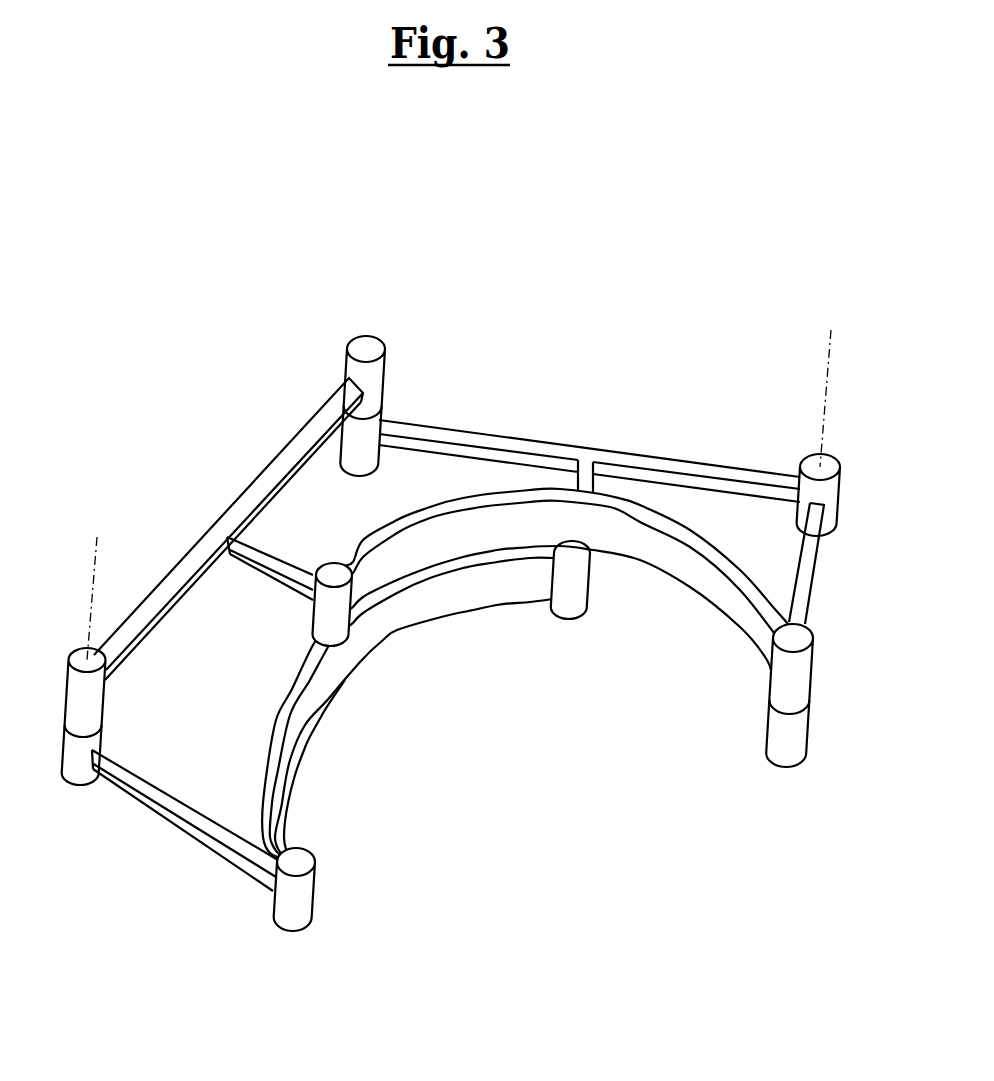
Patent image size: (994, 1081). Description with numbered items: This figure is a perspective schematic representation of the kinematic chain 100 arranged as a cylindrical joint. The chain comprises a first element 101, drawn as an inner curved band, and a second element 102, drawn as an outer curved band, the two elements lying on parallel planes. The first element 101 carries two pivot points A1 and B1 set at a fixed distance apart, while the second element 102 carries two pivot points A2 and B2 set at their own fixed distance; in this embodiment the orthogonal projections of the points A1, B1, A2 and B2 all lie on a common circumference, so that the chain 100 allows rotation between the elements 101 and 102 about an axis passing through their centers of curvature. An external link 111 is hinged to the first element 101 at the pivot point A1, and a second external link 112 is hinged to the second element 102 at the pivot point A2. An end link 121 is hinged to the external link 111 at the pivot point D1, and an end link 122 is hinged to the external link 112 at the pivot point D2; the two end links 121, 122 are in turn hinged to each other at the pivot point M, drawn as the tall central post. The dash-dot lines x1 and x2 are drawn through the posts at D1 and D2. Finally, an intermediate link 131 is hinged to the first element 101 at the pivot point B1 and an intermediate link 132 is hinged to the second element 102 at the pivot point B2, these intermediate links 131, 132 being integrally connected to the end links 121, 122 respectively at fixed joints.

The kinematic chain 100 is at (244, 217).
The pivot point M is at (367, 348).
The intermediate link 131 is at (587, 484).
The end link 122 is at (637, 458).
The second axis x2 is at (841, 398).
The pivot point D2 is at (820, 466).
The external link 112 is at (810, 560).
The pivot point A2 is at (785, 640).
The second element 102 is at (695, 573).
The first element 101 is at (382, 625).
The pivot point B1 is at (565, 610).
The pivot point B2 is at (334, 572).
The intermediate link 132 is at (285, 567).
The end link 121 is at (203, 553).
The first axis x1 is at (108, 597).
The pivot point D1 is at (85, 660).
The external link 111 is at (185, 807).
The pivot point A1 is at (299, 860).